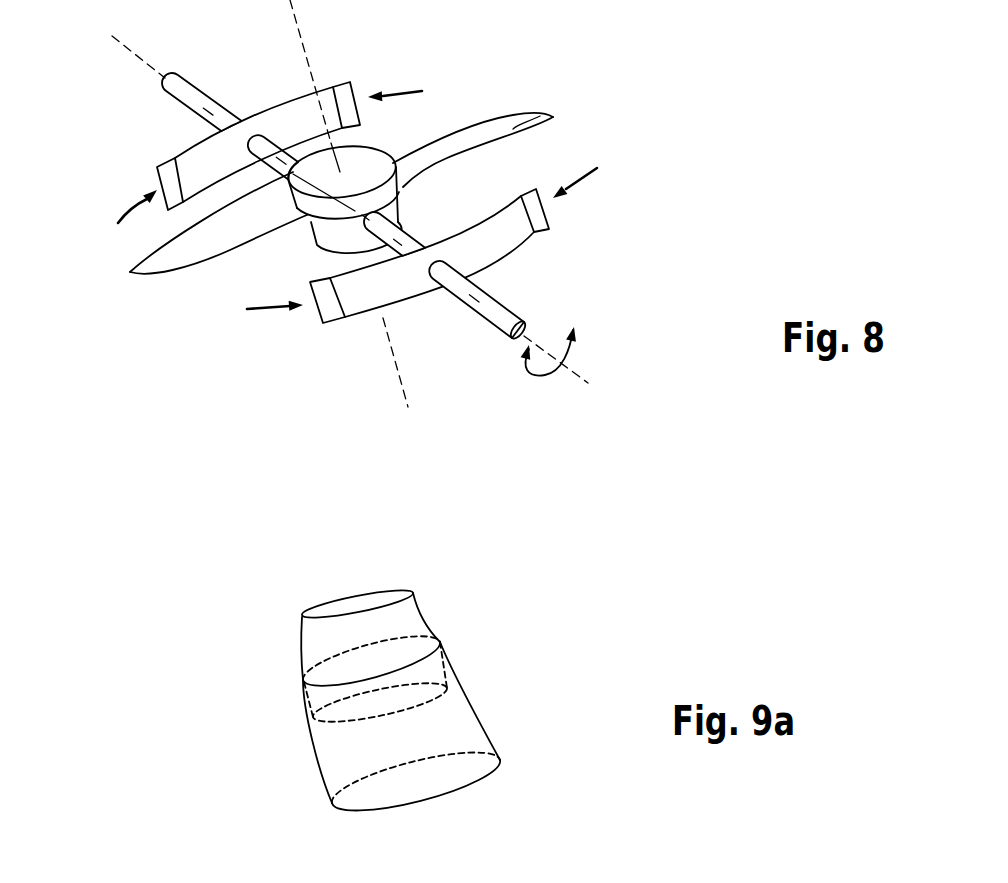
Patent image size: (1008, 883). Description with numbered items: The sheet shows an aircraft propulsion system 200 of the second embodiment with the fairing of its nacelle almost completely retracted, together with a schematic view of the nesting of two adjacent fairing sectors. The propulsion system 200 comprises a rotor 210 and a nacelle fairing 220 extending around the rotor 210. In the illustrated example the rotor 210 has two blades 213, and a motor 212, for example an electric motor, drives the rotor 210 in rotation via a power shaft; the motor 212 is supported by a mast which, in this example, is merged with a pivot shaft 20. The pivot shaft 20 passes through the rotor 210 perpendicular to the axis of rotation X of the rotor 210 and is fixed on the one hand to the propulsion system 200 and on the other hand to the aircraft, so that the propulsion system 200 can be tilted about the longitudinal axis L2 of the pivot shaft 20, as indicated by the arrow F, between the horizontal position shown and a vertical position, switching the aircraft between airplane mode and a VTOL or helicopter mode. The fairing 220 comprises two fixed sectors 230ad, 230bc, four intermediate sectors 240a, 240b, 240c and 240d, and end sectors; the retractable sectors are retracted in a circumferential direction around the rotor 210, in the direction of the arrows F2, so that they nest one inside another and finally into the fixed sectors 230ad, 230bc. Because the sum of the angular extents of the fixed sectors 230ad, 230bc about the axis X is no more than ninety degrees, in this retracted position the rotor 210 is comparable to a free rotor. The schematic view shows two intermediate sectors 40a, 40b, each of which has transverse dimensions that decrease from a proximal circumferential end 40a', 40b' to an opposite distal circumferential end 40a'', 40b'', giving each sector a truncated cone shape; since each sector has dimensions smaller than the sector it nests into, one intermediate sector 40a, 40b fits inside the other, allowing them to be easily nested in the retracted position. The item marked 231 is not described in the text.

In FIG. 8, the aircraft propulsion system 200 is at (365, 203).
In FIG. 8, the rotor 210 is at (366, 187).
In FIG. 8, the motor 212 is at (330, 238).
In FIG. 8, the blade 213 is at (513, 129).
In FIG. 8, the nacelle fairing 220 is at (473, 298).
In FIG. 8, the fixed sector 230ad is at (293, 123).
In FIG. 8, the fixed sector 230bc is at (484, 243).
In FIG. 8, the blade 231 is at (188, 252).
In FIG. 8, the intermediate sector 240a is at (338, 92).
In FIG. 8, the intermediate sector 240b is at (549, 233).
In FIG. 8, the intermediate sector 240c is at (331, 313).
In FIG. 8, the intermediate sector 240d is at (163, 162).
In FIG. 8, the pivot shaft 20 is at (173, 90).
In FIG. 8, the axis of rotation X is at (338, 203).
In FIG. 8, the longitudinal axis L2 is at (350, 204).
In FIG. 8, the arrow F2 is at (355, 205).
In FIG. 8, the arrow F is at (548, 361).
In FIG. 9A, the intermediate sector 40a is at (360, 729).
In FIG. 9A, the intermediate sector 40b is at (351, 659).
In FIG. 9A, the proximal circumferential end 40a' is at (352, 787).
In FIG. 9A, the distal circumferential end 40a'' is at (307, 671).
In FIG. 9A, the proximal circumferential end 40b' is at (321, 704).
In FIG. 9A, the distal circumferential end 40b'' is at (291, 613).